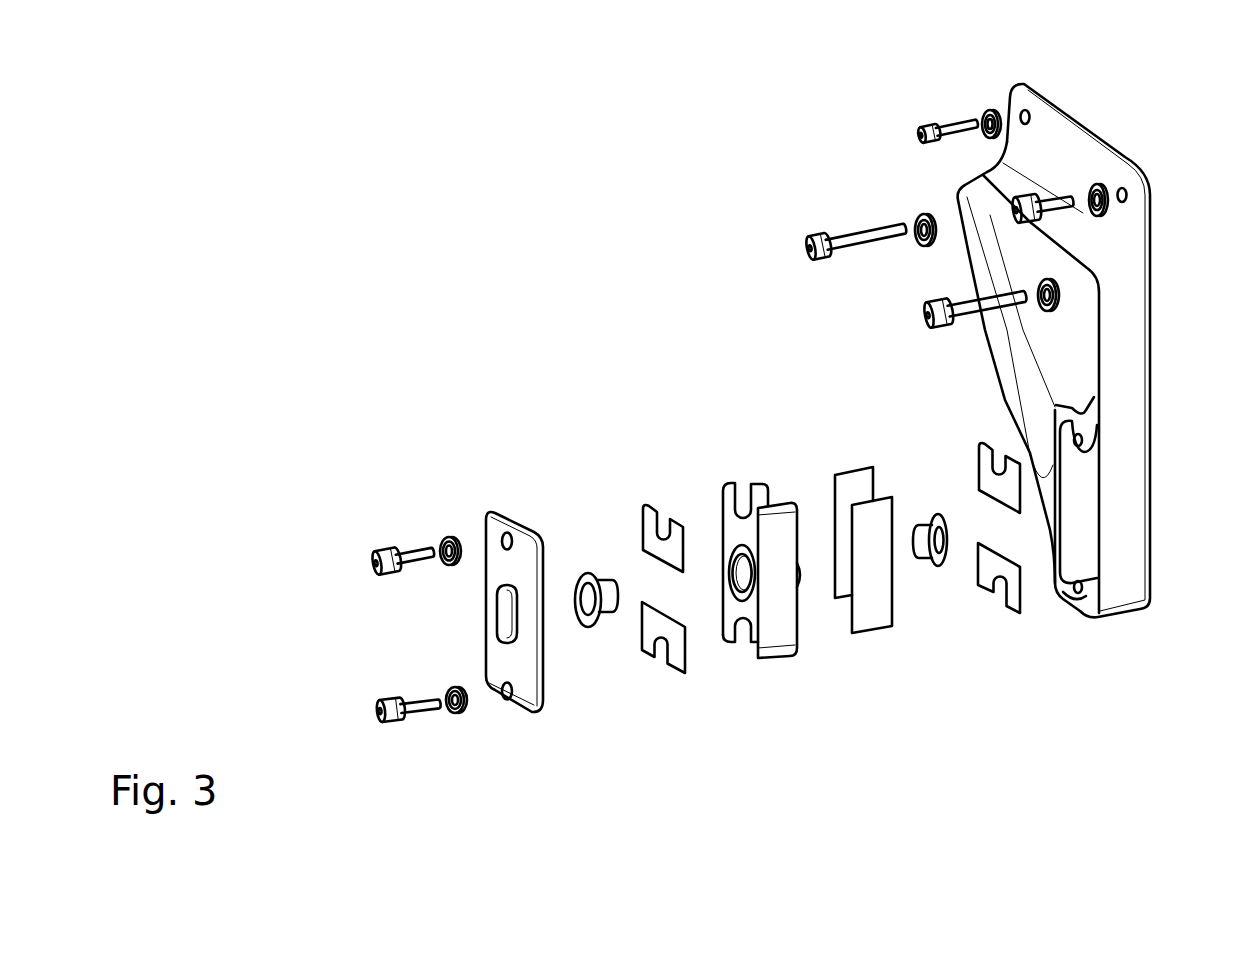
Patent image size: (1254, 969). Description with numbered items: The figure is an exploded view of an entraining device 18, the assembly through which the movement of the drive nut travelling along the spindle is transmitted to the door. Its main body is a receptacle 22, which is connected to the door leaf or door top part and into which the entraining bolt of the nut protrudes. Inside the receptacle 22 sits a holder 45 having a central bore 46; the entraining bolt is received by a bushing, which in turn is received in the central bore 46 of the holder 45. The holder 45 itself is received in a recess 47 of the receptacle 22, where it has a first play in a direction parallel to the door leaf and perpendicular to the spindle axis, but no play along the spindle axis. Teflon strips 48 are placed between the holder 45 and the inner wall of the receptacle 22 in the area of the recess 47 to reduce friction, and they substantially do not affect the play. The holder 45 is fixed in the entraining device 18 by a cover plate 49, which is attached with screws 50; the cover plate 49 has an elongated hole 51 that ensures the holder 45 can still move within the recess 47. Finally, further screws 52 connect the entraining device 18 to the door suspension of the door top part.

The entraining device 18 is at (378, 167).
The receptacle 22 is at (1068, 147).
The holder 45 is at (760, 656).
The central bore 46 is at (738, 555).
The recess 47 is at (925, 523).
The Teflon strips 48 is at (685, 573).
The cover plate 49 is at (502, 508).
The screws 50 is at (378, 575).
The elongated hole 51 is at (508, 638).
The further screws 52 is at (1020, 213).